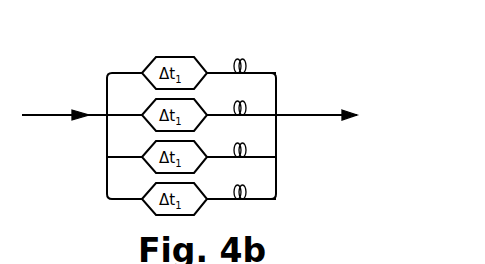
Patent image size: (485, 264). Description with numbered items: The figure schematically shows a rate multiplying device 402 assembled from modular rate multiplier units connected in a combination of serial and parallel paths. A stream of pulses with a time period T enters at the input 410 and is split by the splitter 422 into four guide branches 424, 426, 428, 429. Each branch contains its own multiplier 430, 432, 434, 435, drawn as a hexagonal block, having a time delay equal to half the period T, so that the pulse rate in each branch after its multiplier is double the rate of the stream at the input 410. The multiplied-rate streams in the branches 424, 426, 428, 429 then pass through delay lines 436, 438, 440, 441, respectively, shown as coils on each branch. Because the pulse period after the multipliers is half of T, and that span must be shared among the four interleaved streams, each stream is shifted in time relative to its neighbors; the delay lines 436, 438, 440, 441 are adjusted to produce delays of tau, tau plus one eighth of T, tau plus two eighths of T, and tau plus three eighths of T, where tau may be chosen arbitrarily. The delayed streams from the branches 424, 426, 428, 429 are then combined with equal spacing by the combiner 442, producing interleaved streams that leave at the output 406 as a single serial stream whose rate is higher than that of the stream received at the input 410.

The device 402 is at (297, 65).
The output 406 is at (325, 122).
The input 410 is at (61, 112).
The splitter 422 is at (103, 118).
The guide branch 424 is at (120, 70).
The guide branch 426 is at (112, 119).
The guide branch 428 is at (112, 161).
The guide branch 429 is at (106, 201).
The multiplier 430 is at (190, 56).
The multiplier 432 is at (196, 119).
The multiplier 434 is at (196, 161).
The multiplier 435 is at (150, 210).
The delay line 436 is at (242, 57).
The delay line 438 is at (241, 118).
The delay line 440 is at (241, 160).
The delay line 441 is at (241, 202).
The combiner 442 is at (284, 118).